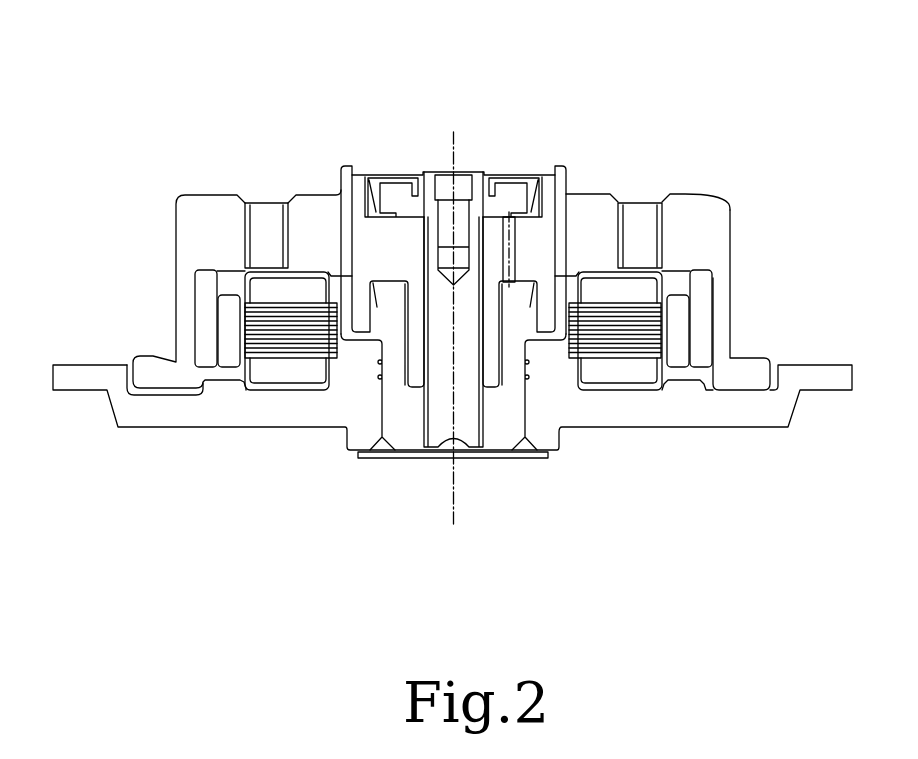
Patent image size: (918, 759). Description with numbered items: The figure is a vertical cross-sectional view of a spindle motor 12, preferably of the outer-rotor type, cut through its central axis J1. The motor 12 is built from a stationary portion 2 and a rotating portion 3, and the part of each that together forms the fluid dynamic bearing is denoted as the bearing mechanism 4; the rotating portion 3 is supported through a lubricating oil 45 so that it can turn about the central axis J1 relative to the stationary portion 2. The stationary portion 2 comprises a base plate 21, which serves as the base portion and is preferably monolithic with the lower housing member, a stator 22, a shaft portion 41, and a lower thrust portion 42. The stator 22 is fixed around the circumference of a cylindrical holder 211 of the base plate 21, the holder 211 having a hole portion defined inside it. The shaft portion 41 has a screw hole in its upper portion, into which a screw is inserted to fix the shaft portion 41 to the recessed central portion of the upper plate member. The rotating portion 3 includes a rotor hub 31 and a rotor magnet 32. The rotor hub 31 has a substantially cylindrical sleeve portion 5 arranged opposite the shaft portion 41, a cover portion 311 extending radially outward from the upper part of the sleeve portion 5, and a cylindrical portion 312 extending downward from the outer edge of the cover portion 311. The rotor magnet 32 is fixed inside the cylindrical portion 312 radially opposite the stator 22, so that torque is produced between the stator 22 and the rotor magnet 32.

The motor 12 is at (185, 102).
The stationary portion 2 is at (672, 495).
The base plate 21 is at (698, 413).
The cylindrical holder 211 is at (545, 383).
The stator 22 is at (609, 382).
The rotating portion 3 is at (695, 90).
The rotor hub 31 is at (645, 127).
The cover portion 311 is at (603, 222).
The cylindrical portion 312 is at (723, 257).
The rotor magnet 32 is at (678, 313).
The fluid dynamic bearing mechanism 4 is at (400, 142).
The shaft portion 41 is at (440, 410).
The lower thrust portion 42 is at (398, 408).
The lubricating oil 45 is at (386, 210).
The sleeve portion 5 is at (493, 248).
The central axis J1 is at (455, 162).